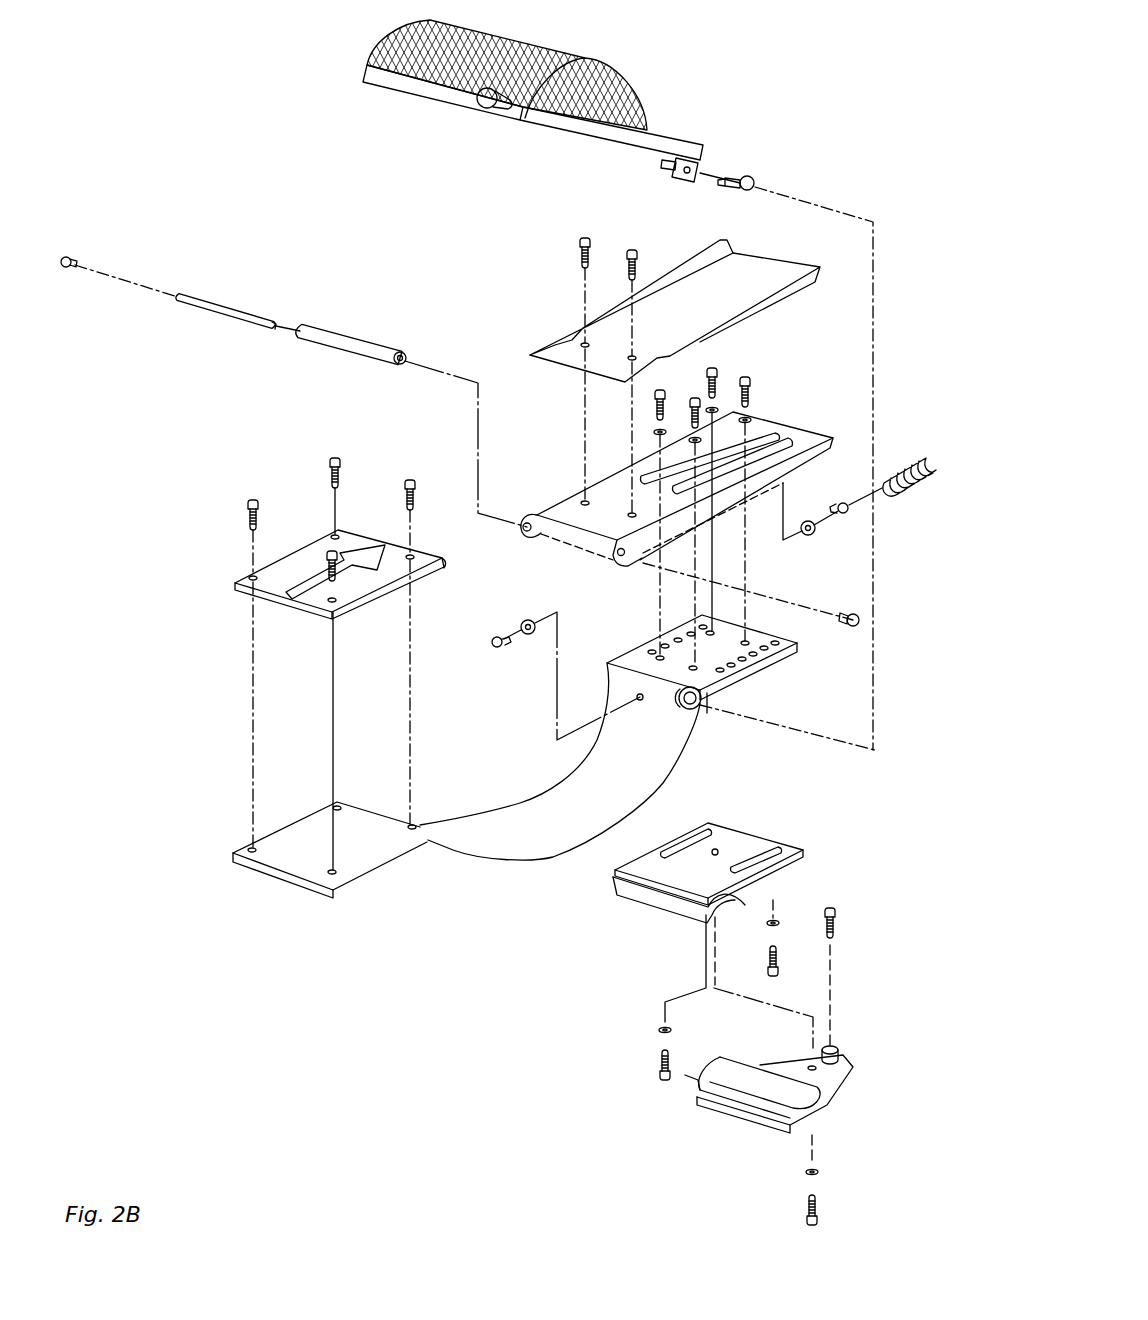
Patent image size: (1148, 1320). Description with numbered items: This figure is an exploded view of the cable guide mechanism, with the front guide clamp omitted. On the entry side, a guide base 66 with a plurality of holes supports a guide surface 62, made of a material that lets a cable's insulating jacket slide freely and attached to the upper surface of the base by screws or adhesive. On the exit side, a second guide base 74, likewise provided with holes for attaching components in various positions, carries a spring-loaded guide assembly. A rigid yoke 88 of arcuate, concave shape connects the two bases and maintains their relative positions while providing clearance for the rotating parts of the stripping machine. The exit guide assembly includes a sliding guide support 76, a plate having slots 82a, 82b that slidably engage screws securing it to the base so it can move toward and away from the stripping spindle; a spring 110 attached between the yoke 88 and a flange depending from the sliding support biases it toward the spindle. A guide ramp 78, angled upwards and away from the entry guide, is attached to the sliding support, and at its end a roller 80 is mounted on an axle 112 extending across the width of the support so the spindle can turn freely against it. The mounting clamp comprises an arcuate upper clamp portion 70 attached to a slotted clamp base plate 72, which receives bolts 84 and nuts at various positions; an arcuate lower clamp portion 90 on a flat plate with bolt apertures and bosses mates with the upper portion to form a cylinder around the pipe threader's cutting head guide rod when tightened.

The guide surface 62 is at (240, 590).
The guide base 66 is at (290, 878).
The upper clamp portion 70 is at (667, 910).
The clamp base plate 72 is at (797, 845).
The guide base 74 is at (797, 648).
The sliding guide support 76 is at (833, 452).
The guide ramp 78 is at (763, 268).
The roller 80 is at (362, 337).
The slot 82a is at (807, 443).
The slot 82b is at (753, 430).
The bolt 84 is at (780, 955).
The yoke 88 is at (560, 860).
The lower clamp portion 90 is at (837, 1085).
The spring 110 is at (910, 467).
The axle 112 is at (245, 310).